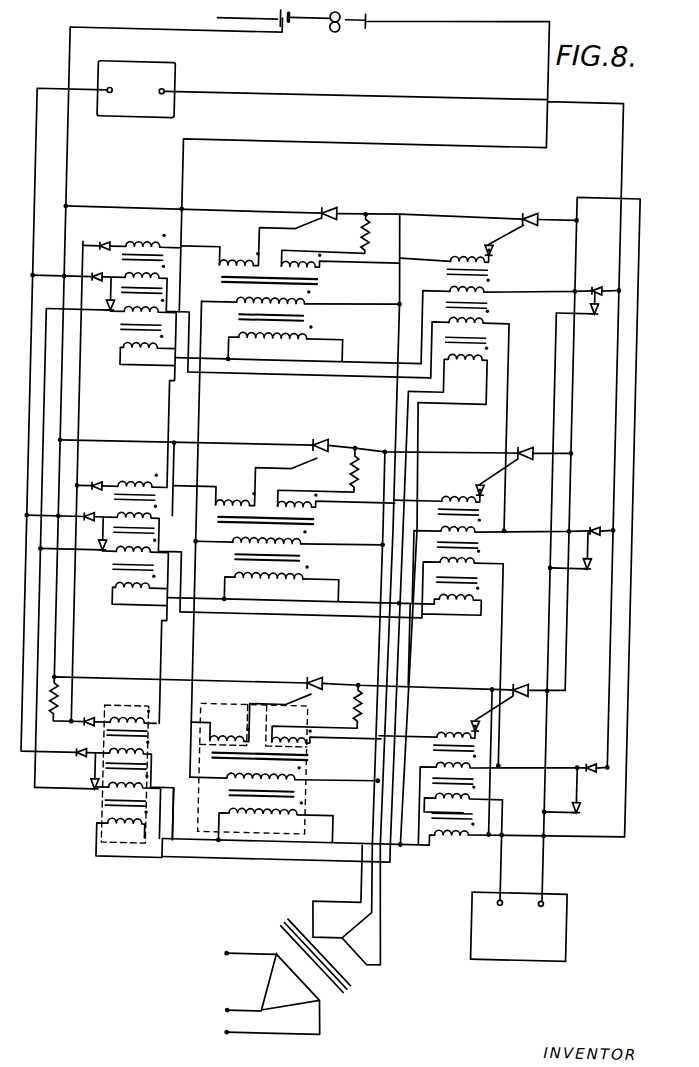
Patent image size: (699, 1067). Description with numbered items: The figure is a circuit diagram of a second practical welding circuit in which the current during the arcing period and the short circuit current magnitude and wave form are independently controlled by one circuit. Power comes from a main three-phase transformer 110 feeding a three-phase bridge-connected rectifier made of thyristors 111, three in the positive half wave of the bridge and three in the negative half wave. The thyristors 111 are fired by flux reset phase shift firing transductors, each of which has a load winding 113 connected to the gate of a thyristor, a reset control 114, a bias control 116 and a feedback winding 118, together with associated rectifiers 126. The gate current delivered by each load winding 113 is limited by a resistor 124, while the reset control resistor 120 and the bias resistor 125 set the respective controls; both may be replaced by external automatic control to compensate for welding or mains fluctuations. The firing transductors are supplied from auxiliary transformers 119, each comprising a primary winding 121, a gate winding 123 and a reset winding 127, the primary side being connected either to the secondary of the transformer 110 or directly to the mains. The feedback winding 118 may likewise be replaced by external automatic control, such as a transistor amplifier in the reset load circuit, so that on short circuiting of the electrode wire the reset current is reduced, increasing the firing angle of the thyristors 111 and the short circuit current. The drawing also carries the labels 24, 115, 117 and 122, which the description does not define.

The resistor 24 is at (66, 702).
The three-phase transformer 110 is at (305, 951).
The thyristors 111 is at (428, 442).
The load winding 113 is at (297, 479).
The reset control 114 is at (478, 762).
The rectifier 115 is at (341, 509).
The bias control 116 is at (478, 797).
The rectifier 117 is at (88, 788).
The feedback winding 118 is at (450, 838).
The auxiliary transformer 119 is at (244, 830).
The reset control resistor 120 is at (135, 102).
The primary winding 121 is at (248, 785).
The winding 122 is at (226, 725).
The gate winding 123 is at (288, 725).
The resistor 124 is at (350, 469).
The bias resistor 125 is at (518, 941).
The rectifier 126 is at (303, 479).
The reset winding 127 is at (220, 857).